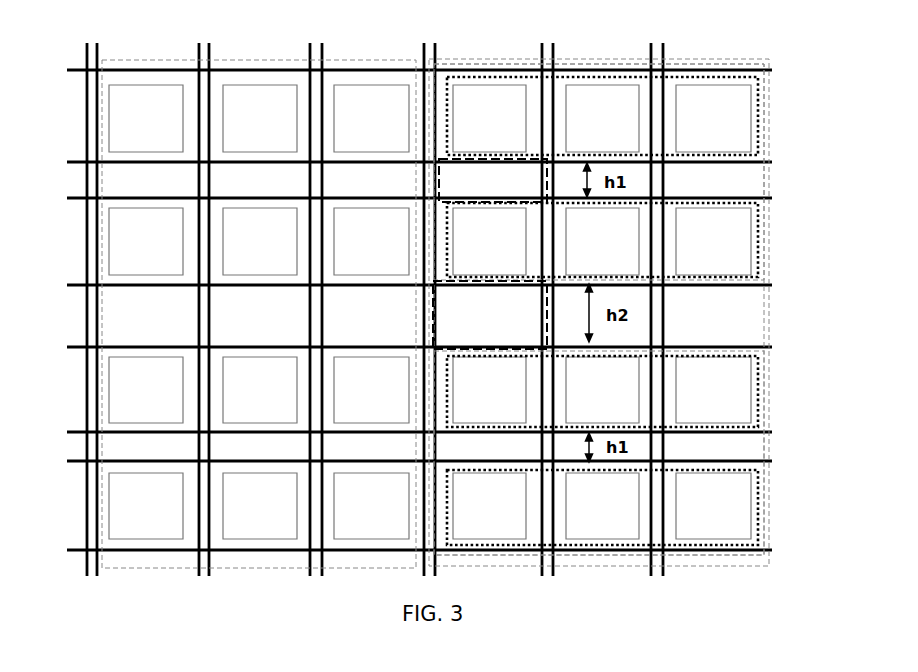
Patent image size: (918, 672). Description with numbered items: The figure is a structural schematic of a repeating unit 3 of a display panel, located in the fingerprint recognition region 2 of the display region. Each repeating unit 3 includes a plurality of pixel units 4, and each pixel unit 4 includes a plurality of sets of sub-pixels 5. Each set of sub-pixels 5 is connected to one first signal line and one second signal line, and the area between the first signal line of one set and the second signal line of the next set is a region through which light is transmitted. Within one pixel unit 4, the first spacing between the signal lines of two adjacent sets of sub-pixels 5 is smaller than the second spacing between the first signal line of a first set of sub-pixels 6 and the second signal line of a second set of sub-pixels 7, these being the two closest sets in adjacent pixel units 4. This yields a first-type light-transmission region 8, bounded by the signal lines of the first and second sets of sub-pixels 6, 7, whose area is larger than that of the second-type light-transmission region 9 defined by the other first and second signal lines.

The fingerprint recognition region 2 is at (55, 35).
The repeating unit 3 is at (233, 60).
The pixel unit 4 is at (764, 108).
The set of sub-pixels 5 is at (758, 146).
The first set of sub-pixels 6 is at (764, 239).
The second set of sub-pixels 7 is at (764, 397).
The first-type light-transmission region 8 is at (433, 310).
The second-type light-transmission region 9 is at (439, 178).